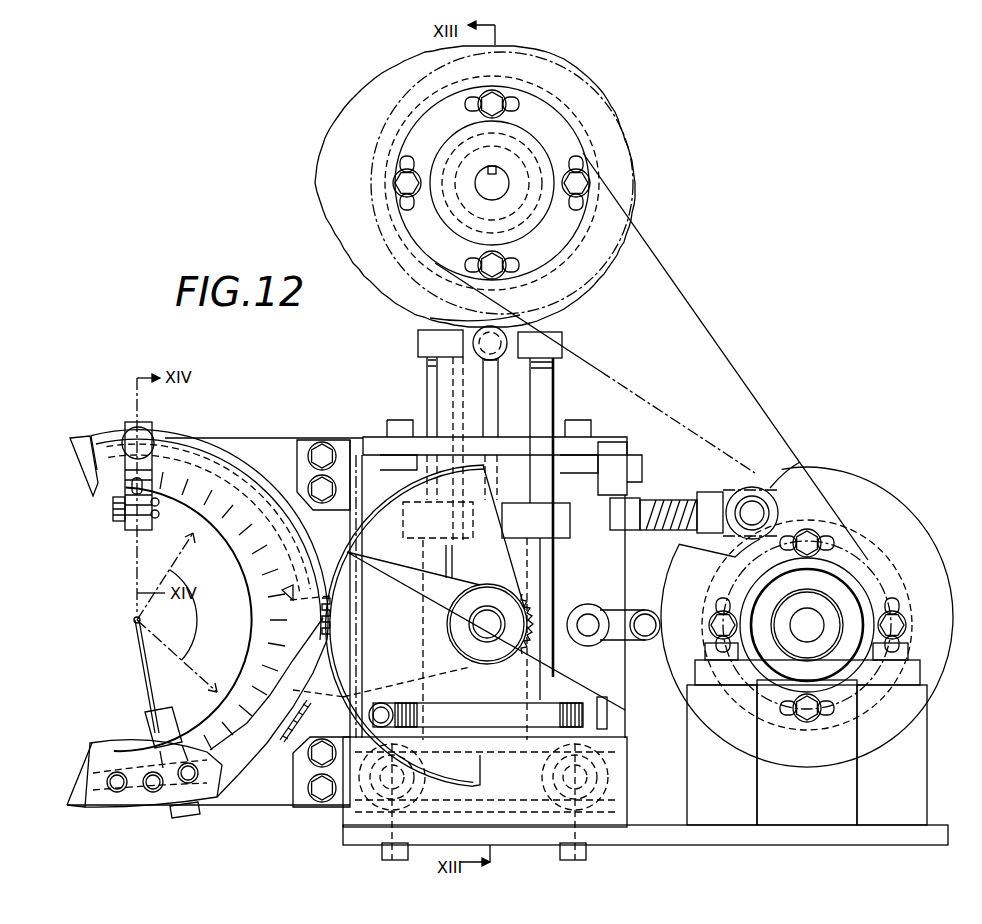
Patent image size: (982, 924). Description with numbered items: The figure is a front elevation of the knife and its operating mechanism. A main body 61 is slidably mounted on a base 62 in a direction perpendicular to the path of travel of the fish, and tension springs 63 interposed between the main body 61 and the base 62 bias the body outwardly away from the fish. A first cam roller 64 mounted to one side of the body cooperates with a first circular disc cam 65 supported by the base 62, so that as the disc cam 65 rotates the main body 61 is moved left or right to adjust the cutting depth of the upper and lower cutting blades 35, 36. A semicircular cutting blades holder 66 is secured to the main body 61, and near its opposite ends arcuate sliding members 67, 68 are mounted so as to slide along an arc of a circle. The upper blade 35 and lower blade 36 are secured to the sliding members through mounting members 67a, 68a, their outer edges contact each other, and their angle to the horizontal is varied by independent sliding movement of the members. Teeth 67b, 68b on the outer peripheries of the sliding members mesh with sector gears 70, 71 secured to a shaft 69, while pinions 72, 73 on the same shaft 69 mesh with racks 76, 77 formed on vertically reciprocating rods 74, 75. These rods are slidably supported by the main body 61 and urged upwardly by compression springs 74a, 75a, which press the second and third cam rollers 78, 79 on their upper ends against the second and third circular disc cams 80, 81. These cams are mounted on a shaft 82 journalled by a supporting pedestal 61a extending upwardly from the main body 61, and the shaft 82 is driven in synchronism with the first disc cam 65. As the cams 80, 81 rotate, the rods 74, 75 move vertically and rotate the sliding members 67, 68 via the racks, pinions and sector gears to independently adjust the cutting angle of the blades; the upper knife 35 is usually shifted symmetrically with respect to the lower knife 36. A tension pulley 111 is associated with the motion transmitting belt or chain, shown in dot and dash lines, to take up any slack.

The upper cutting blade 35 is at (133, 618).
The lower cutting blade 36 is at (168, 642).
The main body 61 is at (612, 683).
The supporting pedestal 61a is at (440, 320).
The base 62 is at (945, 810).
The tension springs 63 is at (385, 705).
The first cam roller 64 is at (647, 650).
The first circular disc cam 65 is at (878, 487).
The semicircular cutting blades holder 66 is at (272, 588).
The arcuate sliding member 67 is at (108, 432).
The mounting member 67a is at (120, 508).
The teeth 67b is at (325, 590).
The arcuate sliding member 68 is at (210, 790).
The mounting member 68a is at (170, 727).
The teeth 68b is at (315, 690).
The shaft 69 is at (470, 625).
The sector gear 70 is at (395, 490).
The sector gear 71 is at (458, 808).
The pinion 72 is at (540, 610).
The pinion 73 is at (487, 624).
The vertically reciprocating rod 74 is at (535, 400).
The compression spring 74a is at (560, 362).
The vertically reciprocating rod 75 is at (437, 400).
The compression spring 75a is at (425, 362).
The rack 76 is at (535, 550).
The rack 77 is at (452, 560).
The second cam roller 78 is at (505, 338).
The third cam roller 79 is at (490, 343).
The second circular disc cam 80 is at (633, 210).
The third circular disc cam 81 is at (502, 183).
The shaft 82 is at (497, 183).
The tension pulley 111 is at (752, 480).